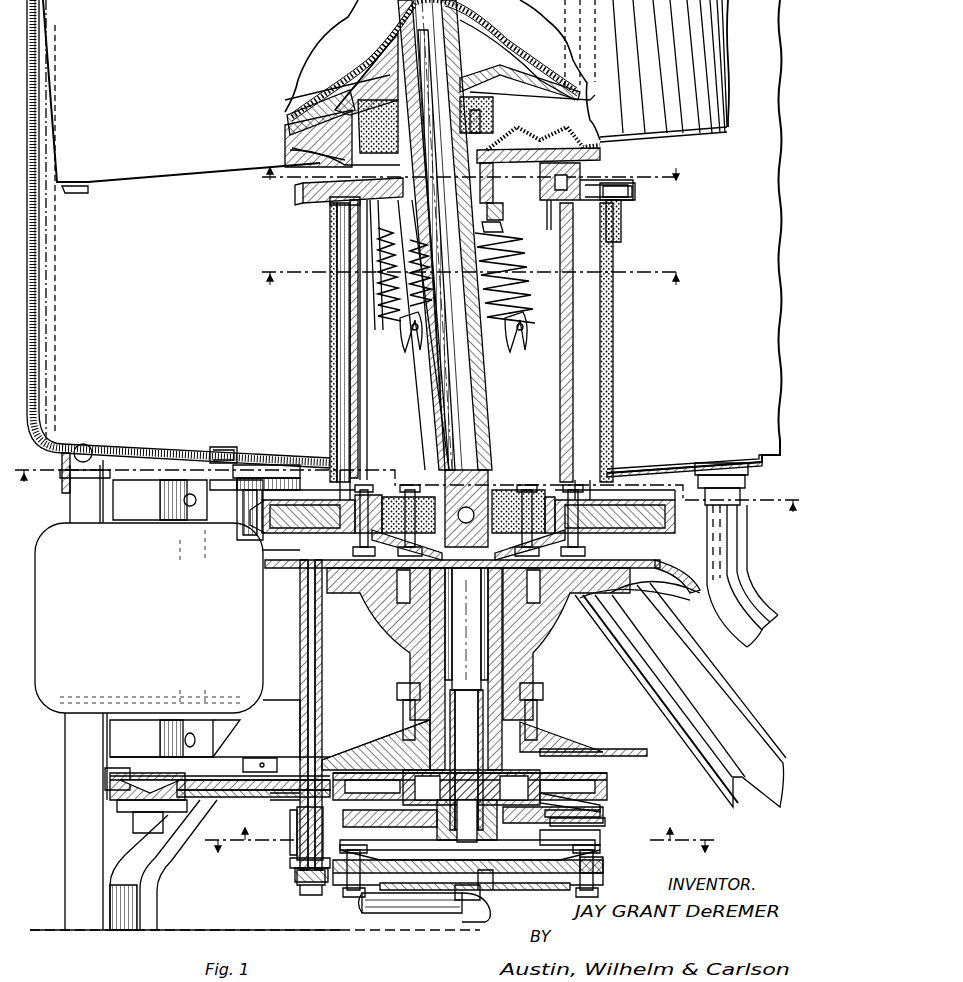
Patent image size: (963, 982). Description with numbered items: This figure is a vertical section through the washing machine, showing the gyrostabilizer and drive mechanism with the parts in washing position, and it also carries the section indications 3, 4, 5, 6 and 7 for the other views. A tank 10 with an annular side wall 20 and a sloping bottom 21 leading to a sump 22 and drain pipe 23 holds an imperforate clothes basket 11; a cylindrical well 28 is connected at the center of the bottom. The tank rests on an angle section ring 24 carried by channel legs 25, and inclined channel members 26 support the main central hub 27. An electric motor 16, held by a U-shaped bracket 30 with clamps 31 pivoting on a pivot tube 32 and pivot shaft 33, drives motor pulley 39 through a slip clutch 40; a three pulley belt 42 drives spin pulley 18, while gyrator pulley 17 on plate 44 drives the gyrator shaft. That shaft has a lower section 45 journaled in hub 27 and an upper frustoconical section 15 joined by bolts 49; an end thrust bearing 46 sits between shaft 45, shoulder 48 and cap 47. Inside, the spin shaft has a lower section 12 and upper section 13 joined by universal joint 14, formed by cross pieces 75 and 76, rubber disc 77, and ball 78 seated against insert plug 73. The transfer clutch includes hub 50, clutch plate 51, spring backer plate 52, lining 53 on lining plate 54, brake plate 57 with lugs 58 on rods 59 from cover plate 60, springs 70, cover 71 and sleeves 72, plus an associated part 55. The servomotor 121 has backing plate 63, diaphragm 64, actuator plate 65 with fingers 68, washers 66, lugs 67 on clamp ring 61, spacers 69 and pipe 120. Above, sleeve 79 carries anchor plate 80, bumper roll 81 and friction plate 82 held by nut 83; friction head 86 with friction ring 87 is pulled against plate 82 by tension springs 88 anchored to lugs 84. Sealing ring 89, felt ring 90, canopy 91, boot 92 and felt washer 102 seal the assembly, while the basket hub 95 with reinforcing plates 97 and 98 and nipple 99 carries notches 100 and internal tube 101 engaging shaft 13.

The section line 3- 3 is at (407, 482).
The section line 4- 4 is at (470, 274).
The section line 5- 5 is at (460, 843).
The section line 6- 6 is at (470, 179).
The section line 7- 7 is at (459, 836).
The tank 10 is at (132, 333).
The clothes basket 11 is at (190, 67).
The lower spin shaft section 12 is at (510, 635).
The upper spin shaft section 13 is at (490, 392).
The universal joint 14 is at (555, 492).
The upper gyrator shaft section 15 is at (355, 372).
The electric motor 16 is at (160, 599).
The gyrator pulley 17 is at (300, 465).
The spin pulley 18 is at (570, 775).
The annular side wall 20 is at (32, 298).
The sloping bottom 21 is at (223, 460).
The sump 22 is at (693, 463).
The drain pipe 23 is at (750, 542).
The angle section ring 24 is at (63, 482).
The channel legs 25 is at (75, 760).
The inclined channel members 26 is at (165, 860).
The main central hub 27 is at (395, 630).
The cylindrical well 28 is at (330, 390).
The U-shaped bracket 30 is at (243, 470).
The clamps 31 is at (113, 517).
The pivot tube 32 is at (238, 520).
The pivot shaft 33 is at (245, 765).
The motor pulley 39 is at (113, 770).
The slip clutch 40 is at (127, 818).
The three pulley belt 42 is at (113, 785).
The plate 44 is at (562, 550).
The lower gyrator shaft section 45 is at (520, 660).
The end thrust bearing 46 is at (535, 718).
The cap 47 is at (560, 728).
The shoulder 48 is at (462, 735).
The bolts 49 is at (340, 470).
The hub 50 is at (478, 840).
The clutch plate 51 is at (595, 803).
The spring backer plate 52 is at (505, 890).
The brake lining 53 is at (600, 824).
The lining plate 54 is at (608, 840).
The seal 55 is at (365, 838).
The brake plate 57 is at (600, 812).
The lugs 58 is at (297, 815).
The rods 59 is at (318, 678).
The cover plate 60 is at (668, 578).
The clamp ring 61 is at (600, 862).
The dished backing plate 63 is at (500, 900).
The flexible diaphragm 64 is at (455, 887).
The dished actuator plate 65 is at (465, 870).
The spacing washers 66 is at (300, 870).
The lugs 67 is at (395, 885).
The fingers 68 is at (297, 855).
The spacers 69 is at (297, 838).
The helical springs 70 is at (295, 800).
The cover 71 is at (370, 740).
The sleeves 72 is at (322, 693).
The insert plug 73 is at (450, 470).
The cross piece 75 is at (500, 530).
The cross piece 76 is at (498, 490).
The neoprene rubber disc 77 is at (428, 515).
The ball 78 is at (463, 480).
The sleeve 79 is at (490, 235).
The conical anchor plate 80 is at (503, 220).
The bumper roll 81 is at (503, 205).
The spherical friction plate 82 is at (308, 193).
The nut 83 is at (495, 117).
The lugs 84 is at (380, 338).
The friction head 86 is at (550, 205).
The friction ring 87 is at (605, 163).
The helical tension springs 88 is at (380, 293).
The sealing ring 89 is at (628, 205).
The felt ring 90 is at (622, 228).
The canopy 91 is at (322, 147).
The bellows-like boot 92 is at (318, 120).
The cone-like hub 95 is at (362, 66).
The reinforcing plate 97 is at (495, 58).
The reinforcing plate 98 is at (515, 75).
The nipple 99 is at (462, 30).
The notches 100 is at (460, 53).
The internal tube 101 is at (470, 340).
The felt washer 102 is at (320, 95).
The pipe 120 is at (420, 920).
The hydraulic servomotor 121 is at (493, 915).